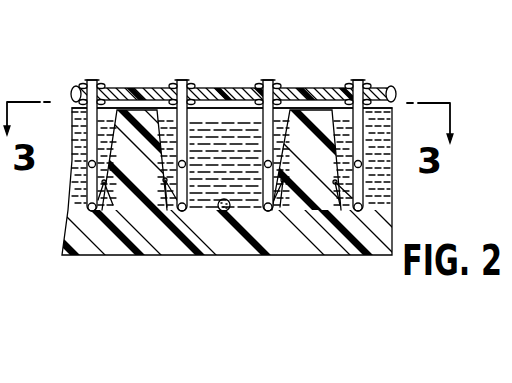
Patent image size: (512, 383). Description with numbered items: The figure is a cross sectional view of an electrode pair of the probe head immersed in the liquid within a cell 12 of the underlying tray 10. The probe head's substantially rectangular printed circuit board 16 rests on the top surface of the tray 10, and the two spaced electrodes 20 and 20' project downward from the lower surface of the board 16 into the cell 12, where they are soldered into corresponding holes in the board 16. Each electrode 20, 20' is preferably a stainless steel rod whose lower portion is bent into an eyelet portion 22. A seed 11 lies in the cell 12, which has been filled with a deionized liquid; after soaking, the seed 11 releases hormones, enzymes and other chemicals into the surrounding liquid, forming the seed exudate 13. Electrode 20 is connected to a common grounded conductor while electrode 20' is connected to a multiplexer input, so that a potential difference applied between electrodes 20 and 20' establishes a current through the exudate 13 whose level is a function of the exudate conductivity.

The tray 10 is at (387, 238).
The seed 11 is at (225, 212).
The cell 12 is at (345, 190).
The seed exudate 13 is at (220, 130).
The printed circuit board 16 is at (329, 92).
The electrode 20 is at (300, 127).
The electrode 20' is at (196, 125).
The eyelet portion 22 is at (192, 196).